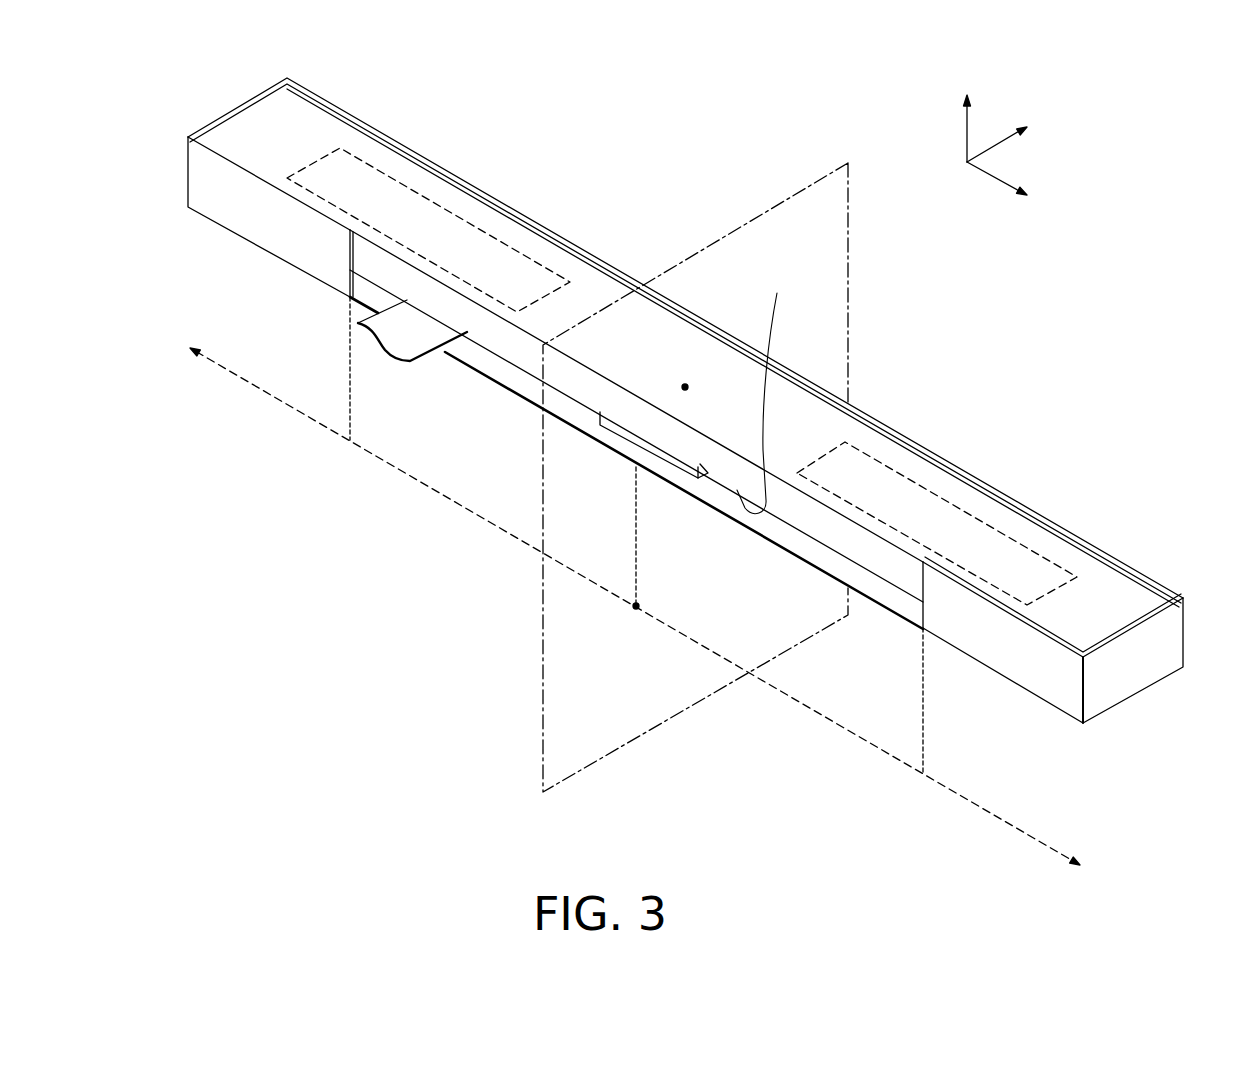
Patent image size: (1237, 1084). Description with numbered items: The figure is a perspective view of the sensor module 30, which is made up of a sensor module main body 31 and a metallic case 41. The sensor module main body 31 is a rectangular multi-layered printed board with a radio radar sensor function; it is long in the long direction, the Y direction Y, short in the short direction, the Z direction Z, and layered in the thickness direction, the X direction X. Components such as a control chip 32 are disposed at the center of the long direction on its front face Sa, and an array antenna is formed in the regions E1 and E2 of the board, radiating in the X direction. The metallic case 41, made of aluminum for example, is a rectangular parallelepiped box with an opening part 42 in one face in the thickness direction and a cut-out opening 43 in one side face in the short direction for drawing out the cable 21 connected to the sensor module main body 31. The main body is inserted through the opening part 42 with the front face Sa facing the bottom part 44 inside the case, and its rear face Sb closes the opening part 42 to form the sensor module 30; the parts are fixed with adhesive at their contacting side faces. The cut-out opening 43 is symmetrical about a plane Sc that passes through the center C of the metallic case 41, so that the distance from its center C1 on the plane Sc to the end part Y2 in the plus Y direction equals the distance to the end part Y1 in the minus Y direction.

The sensor module 30 is at (480, 140).
The sensor module main body 31 is at (785, 410).
The control chip 32 is at (680, 474).
The cable 21 is at (410, 363).
The metallic case 41 is at (1138, 695).
The opening part 42 is at (1133, 590).
The cut-out opening 43 is at (923, 607).
The bottom part 44 is at (817, 550).
The region E1 is at (531, 259).
The region E2 is at (1004, 529).
The front face Sa is at (767, 388).
The rear face Sb is at (673, 346).
The plane Sc is at (543, 737).
The center C is at (686, 384).
The center C1 is at (637, 559).
The end part Y1 is at (635, 581).
The end part Y2 is at (921, 722).
The X direction X is at (967, 114).
The Y direction Y is at (1008, 185).
The Z direction Z is at (1009, 135).